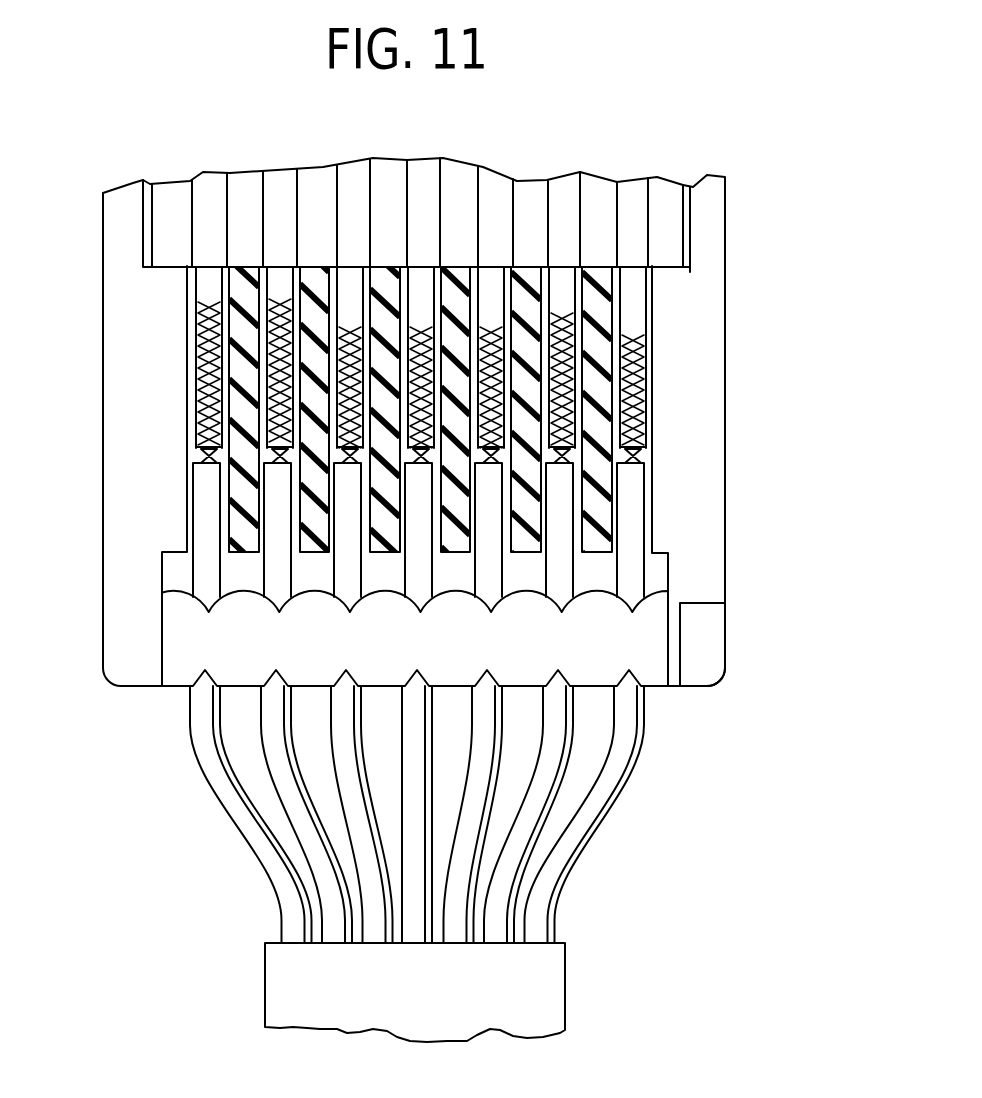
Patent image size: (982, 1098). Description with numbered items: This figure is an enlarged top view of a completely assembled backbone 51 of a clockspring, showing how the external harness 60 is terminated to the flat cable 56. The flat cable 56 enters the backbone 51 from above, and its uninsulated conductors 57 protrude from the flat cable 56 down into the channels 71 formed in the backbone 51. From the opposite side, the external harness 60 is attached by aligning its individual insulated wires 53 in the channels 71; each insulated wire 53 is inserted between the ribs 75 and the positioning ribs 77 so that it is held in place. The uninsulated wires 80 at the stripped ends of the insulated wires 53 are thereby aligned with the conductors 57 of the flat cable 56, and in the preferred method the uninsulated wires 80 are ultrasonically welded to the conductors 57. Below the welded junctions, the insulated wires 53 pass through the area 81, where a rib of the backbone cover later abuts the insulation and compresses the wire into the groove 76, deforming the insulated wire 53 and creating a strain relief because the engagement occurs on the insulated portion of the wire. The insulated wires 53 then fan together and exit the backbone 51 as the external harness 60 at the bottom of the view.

The backbone 51 is at (128, 378).
The insulated wires 53 is at (612, 796).
The flat cable 56 is at (667, 198).
The conductors 57 is at (633, 302).
The external harness 60 is at (523, 992).
The channels 71 is at (647, 508).
The ribs 75 is at (242, 551).
The groove 76 is at (400, 589).
The positioning ribs 77 is at (658, 690).
The uninsulated wires 80 is at (640, 453).
The area 81 is at (630, 597).